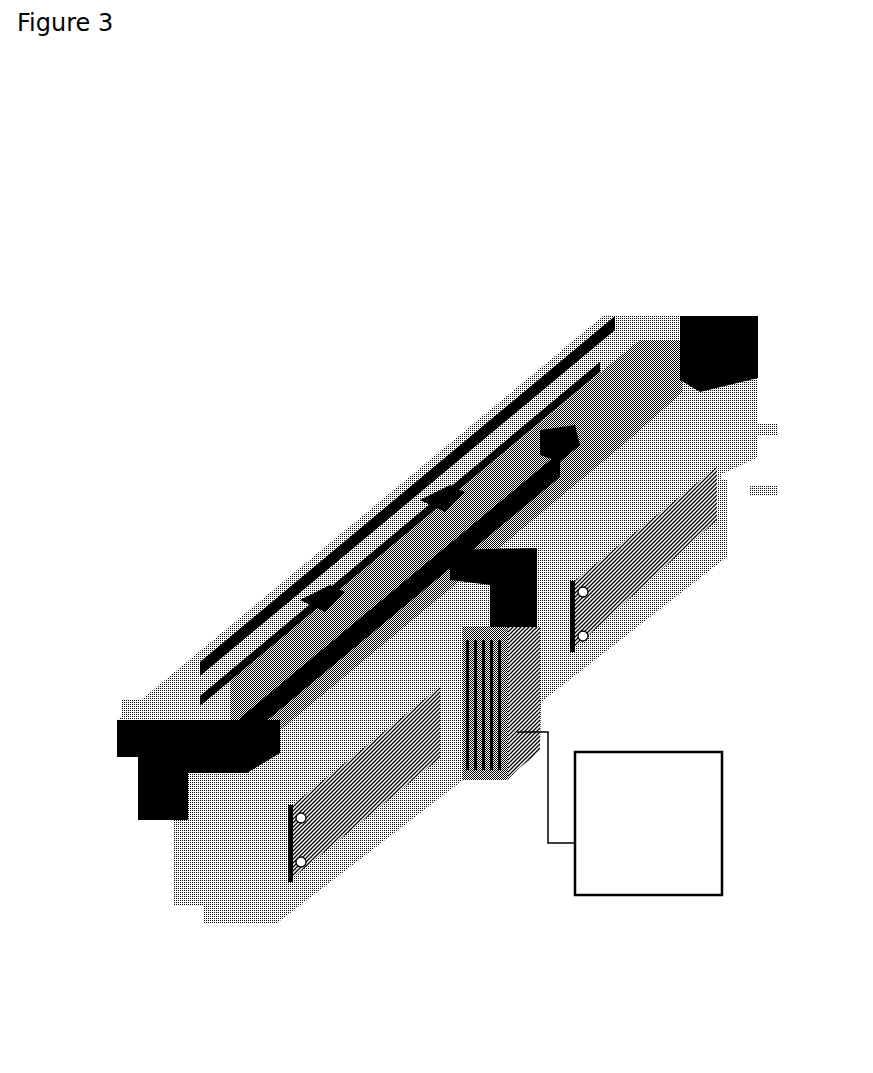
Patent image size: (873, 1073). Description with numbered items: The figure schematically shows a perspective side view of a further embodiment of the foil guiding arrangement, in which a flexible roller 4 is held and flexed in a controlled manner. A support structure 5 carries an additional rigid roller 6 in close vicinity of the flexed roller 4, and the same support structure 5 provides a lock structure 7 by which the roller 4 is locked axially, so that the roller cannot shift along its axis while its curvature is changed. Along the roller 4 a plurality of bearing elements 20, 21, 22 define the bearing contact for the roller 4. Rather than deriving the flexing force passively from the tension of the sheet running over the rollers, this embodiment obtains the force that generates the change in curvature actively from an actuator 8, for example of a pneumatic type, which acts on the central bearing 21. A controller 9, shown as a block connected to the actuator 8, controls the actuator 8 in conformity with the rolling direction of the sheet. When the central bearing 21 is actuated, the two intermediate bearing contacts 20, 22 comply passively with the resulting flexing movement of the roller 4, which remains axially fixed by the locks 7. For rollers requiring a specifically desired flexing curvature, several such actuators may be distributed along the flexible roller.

The flexed roller 4 is at (303, 645).
The support structure 5 is at (262, 786).
The rigid roller 6 is at (348, 530).
The lock structure 7 is at (180, 692).
The actuator 8 is at (517, 603).
The controller 9 is at (619, 813).
The bearing element 20 is at (290, 578).
The bearing element 21 is at (410, 495).
The bearing element 22 is at (535, 425).